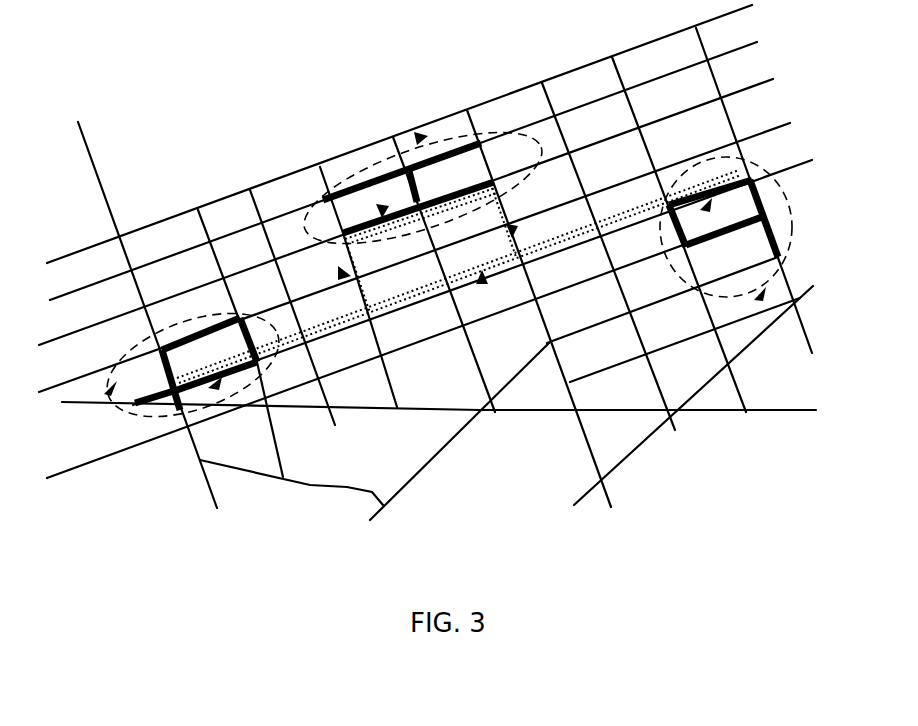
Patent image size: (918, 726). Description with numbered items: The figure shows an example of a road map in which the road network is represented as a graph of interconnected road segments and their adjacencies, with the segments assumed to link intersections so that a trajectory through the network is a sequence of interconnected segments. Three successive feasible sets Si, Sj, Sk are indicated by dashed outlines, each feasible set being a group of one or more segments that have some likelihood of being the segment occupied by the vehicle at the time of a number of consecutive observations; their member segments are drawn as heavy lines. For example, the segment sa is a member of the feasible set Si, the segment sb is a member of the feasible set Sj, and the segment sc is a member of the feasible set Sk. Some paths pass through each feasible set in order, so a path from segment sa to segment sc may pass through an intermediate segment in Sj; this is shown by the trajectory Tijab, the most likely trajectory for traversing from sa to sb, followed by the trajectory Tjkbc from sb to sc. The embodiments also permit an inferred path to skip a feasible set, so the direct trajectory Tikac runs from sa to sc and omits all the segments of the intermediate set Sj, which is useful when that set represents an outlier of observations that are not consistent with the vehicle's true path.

The feasible set Si is at (110, 392).
The feasible set Sj is at (420, 135).
The feasible set Sk is at (760, 296).
The segment sa is at (215, 384).
The segment sb is at (382, 214).
The segment sc is at (707, 205).
The most likely trajectory Tijab is at (345, 270).
The most likely trajectory Tjkbc is at (510, 228).
The most likely trajectory Tikac is at (482, 284).